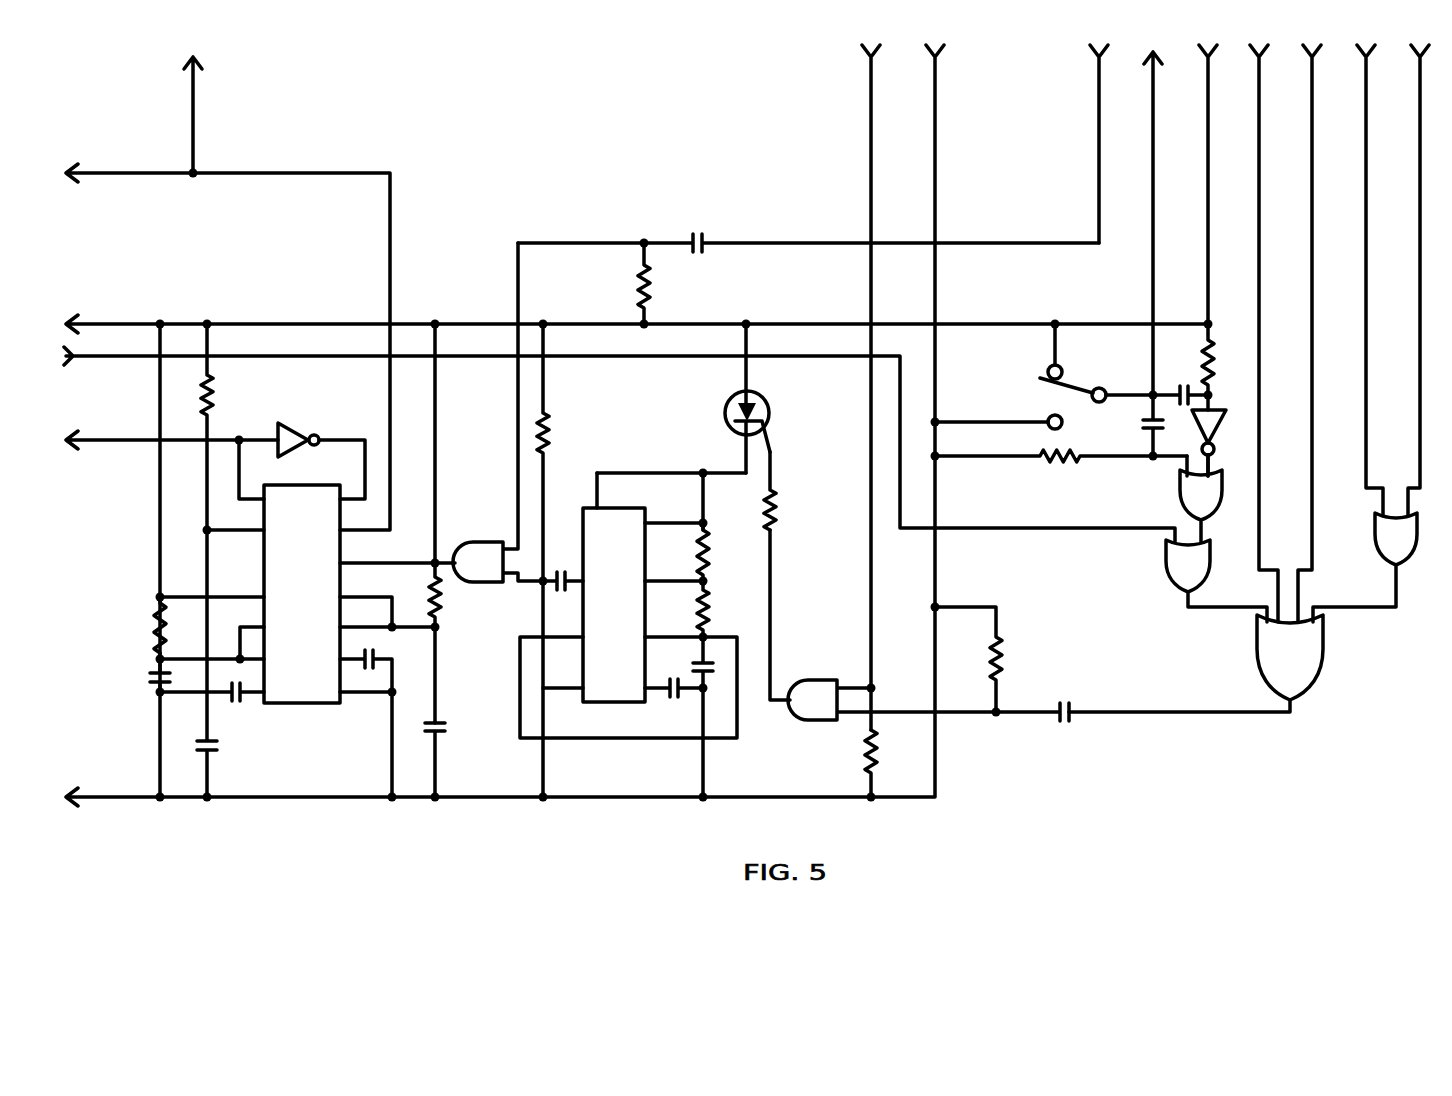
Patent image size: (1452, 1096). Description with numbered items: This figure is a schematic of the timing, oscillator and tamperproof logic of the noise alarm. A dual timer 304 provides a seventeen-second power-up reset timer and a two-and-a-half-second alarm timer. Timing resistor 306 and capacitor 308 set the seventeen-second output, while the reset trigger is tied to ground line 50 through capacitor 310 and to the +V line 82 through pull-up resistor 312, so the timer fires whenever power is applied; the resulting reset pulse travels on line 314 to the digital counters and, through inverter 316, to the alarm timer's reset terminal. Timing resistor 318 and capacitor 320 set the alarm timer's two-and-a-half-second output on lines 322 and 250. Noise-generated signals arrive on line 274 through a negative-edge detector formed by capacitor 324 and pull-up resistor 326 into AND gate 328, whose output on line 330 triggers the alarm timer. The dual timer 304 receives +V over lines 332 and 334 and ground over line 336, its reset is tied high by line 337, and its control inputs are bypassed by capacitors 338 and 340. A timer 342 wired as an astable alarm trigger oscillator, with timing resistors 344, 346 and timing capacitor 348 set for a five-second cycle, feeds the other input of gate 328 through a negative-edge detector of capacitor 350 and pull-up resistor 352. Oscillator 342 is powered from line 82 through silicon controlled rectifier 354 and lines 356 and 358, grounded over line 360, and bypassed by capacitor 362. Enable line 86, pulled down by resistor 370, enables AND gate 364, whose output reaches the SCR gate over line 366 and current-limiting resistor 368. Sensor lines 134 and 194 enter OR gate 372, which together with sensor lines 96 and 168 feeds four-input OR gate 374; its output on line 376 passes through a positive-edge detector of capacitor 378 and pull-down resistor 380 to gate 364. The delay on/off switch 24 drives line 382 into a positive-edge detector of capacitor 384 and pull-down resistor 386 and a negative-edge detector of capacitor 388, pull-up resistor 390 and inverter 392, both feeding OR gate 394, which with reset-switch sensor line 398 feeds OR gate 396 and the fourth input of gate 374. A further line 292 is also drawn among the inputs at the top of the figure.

The delay on/off switch 24 is at (1031, 390).
The ground line 50 is at (92, 797).
The +V line 82 is at (92, 324).
The enable line 86 is at (868, 112).
The sensor line 96 is at (1257, 112).
The sensor line 134 is at (1364, 112).
The sensor line 168 is at (1310, 112).
The sensor line 194 is at (1418, 112).
The line 250 is at (190, 104).
The line 274 is at (1096, 107).
The line 292 is at (1150, 112).
The 556 dual timer 304 is at (308, 705).
The timing resistor 306 is at (156, 620).
The capacitor 308 is at (156, 668).
The capacitor 310 is at (214, 752).
The pull-up resistor 312 is at (212, 390).
The line 314 is at (92, 440).
The 4069 inverter 316 is at (298, 424).
The timing resistor 318 is at (440, 602).
The capacitor 320 is at (440, 736).
The line 322 is at (100, 173).
The capacitor 324 is at (704, 240).
The pull-up resistor 326 is at (650, 288).
The 4081 2-input AND gate 328 is at (496, 540).
The line 330 is at (364, 560).
The line 332 is at (158, 390).
The line 334 is at (205, 543).
The line 336 is at (390, 775).
The line 337 is at (200, 597).
The capacitor 338 is at (258, 726).
The capacitor 340 is at (372, 658).
The 555 timer 342 is at (614, 703).
The timing resistor 344 is at (708, 548).
The timing resistor 346 is at (708, 610).
The timing capacitor 348 is at (700, 667).
The capacitor 350 is at (574, 592).
The pull-up resistor 352 is at (548, 428).
The silicon controlled rectifier 354 is at (733, 394).
The line 356 is at (666, 472).
The line 358 is at (700, 505).
The line 360 is at (546, 752).
The capacitor 362 is at (686, 700).
The 4081 2-input AND gate 364 is at (818, 722).
The line 366 is at (774, 620).
The current-limiting resistor 368 is at (776, 512).
The pull-down resistor 370 is at (866, 758).
The 4071 2-input OR gate 372 is at (1378, 545).
The 4072 4-input OR gate 374 is at (1320, 665).
The line 376 is at (1165, 716).
The capacitor 378 is at (1074, 706).
The pull-down resistor 380 is at (1002, 656).
The line 382 is at (1146, 392).
The capacitor 384 is at (1148, 428).
The pull-down resistor 386 is at (1066, 464).
The capacitor 388 is at (1200, 388).
The pull-up resistor 390 is at (1214, 364).
The 4069 inverter 392 is at (1240, 434).
The 4071 2-input OR gate 394 is at (1178, 506).
The 4071 2-input OR gate 396 is at (1168, 582).
The sensor line 398 is at (92, 356).